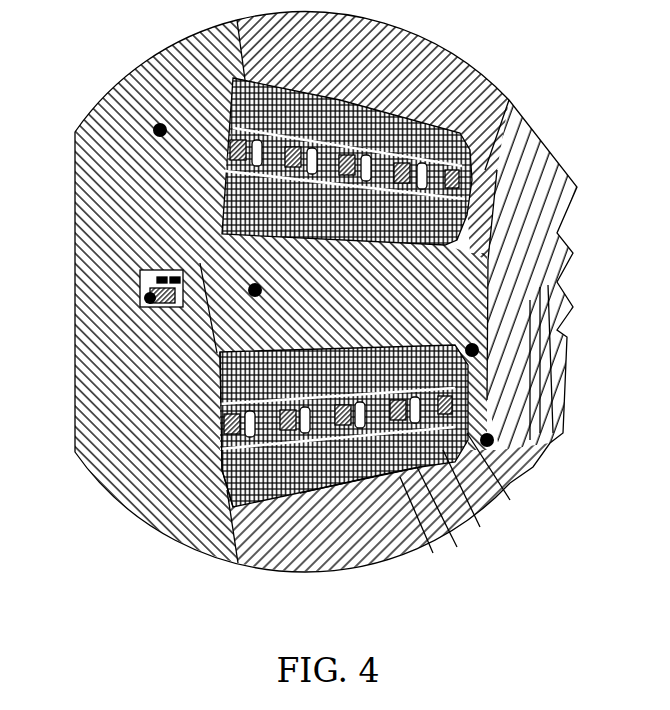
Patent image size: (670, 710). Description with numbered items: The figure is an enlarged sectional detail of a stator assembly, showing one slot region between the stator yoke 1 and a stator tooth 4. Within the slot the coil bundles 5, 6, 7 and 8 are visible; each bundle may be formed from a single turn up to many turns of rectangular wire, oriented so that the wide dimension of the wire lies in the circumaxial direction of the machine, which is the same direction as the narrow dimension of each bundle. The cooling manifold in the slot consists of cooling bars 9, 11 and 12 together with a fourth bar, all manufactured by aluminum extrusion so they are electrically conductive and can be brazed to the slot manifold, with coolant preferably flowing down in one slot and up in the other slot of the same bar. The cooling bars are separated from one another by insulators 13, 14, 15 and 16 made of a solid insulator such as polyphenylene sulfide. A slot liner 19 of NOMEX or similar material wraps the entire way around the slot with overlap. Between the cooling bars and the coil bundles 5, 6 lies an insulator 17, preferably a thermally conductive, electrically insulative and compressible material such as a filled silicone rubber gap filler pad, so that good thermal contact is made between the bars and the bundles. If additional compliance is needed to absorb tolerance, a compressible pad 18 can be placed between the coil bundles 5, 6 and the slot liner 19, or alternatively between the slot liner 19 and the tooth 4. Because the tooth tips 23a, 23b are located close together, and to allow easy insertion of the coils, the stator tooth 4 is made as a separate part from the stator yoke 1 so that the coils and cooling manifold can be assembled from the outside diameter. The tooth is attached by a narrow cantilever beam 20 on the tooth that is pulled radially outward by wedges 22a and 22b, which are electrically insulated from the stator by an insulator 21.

The stator yoke 1 is at (138, 100).
The stator tooth 4 is at (262, 291).
The coil bundle 5 is at (418, 548).
The coil bundle 6 is at (345, 478).
The coil bundle 7 is at (386, 348).
The coil bundle 8 is at (272, 351).
The cooling bar 9 is at (344, 351).
The cooling bar 11 is at (375, 475).
The cooling bar 12 is at (227, 470).
The insulator 13 is at (477, 523).
The insulator 14 is at (420, 472).
The insulator 15 is at (388, 507).
The insulator 16 is at (222, 433).
The insulator 17 is at (507, 500).
The compressible pad 18 is at (450, 535).
The slot liner 19 is at (500, 440).
The cantilever beam 20 is at (138, 292).
The insulator 21 is at (150, 305).
The wedge 22a is at (143, 268).
The wedge 22b is at (192, 268).
The tooth tip 23a is at (480, 372).
The tooth tip 23b is at (500, 445).